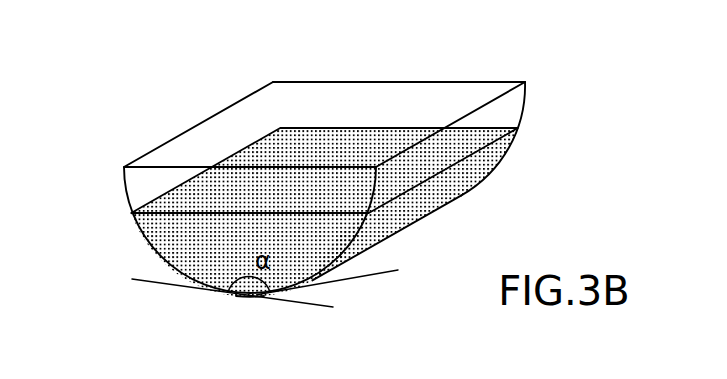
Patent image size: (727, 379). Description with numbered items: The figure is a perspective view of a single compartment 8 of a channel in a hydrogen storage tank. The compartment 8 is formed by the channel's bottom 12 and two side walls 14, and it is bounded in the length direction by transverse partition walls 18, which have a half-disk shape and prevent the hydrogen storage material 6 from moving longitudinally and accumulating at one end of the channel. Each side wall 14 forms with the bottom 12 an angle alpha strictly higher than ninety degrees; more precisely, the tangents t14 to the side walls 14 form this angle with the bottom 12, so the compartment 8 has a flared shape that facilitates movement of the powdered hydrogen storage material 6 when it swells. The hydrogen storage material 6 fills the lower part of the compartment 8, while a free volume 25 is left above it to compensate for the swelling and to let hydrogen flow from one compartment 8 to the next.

The compartment 8 is at (138, 112).
The hydrogen storage material 6 is at (317, 143).
The free volume 25 is at (242, 118).
The transverse partition wall 18 is at (402, 102).
The side wall 14 is at (467, 172).
The tangent to the side wall t14 is at (160, 285).
The bottom 12 is at (234, 298).